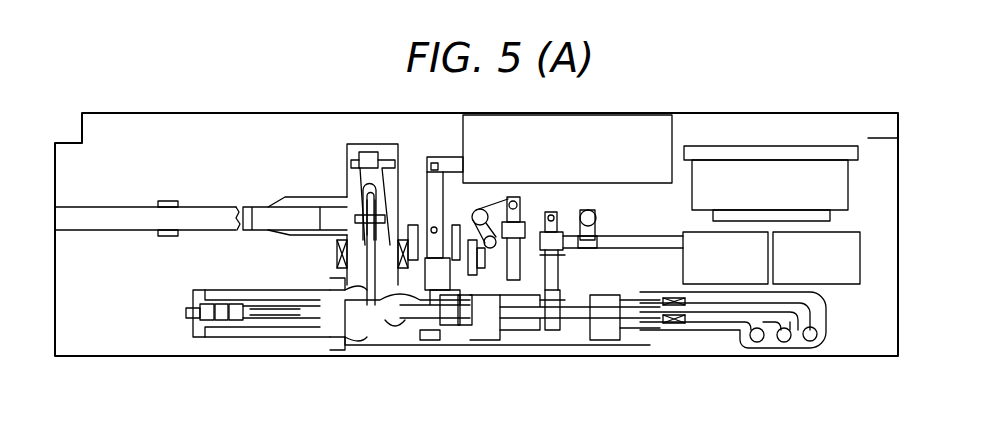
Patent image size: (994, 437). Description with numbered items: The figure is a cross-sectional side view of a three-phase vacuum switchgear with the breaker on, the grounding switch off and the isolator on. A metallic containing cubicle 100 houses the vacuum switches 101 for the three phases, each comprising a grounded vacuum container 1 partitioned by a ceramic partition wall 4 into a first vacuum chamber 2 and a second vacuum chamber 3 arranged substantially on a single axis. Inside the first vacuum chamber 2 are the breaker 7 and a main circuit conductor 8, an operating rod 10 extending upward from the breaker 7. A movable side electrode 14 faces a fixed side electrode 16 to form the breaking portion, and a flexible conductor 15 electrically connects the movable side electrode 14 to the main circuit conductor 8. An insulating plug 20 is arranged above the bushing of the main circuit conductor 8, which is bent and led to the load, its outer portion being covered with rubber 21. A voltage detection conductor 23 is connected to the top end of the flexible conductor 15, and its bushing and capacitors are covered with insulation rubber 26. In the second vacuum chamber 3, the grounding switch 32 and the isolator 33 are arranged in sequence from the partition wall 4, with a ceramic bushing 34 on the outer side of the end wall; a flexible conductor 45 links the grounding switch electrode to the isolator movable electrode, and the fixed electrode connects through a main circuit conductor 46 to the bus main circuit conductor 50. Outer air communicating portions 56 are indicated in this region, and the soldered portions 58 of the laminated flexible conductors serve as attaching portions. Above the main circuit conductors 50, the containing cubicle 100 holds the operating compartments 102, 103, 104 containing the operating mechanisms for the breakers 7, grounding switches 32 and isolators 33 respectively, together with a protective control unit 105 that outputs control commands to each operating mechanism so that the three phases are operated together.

The containing cubicle 100 is at (246, 113).
The rubber 21 is at (278, 238).
The insulating plug 20 is at (362, 180).
The breaker 7 is at (424, 255).
The operating rod 10 is at (495, 233).
The grounding switch 32 is at (540, 255).
The operating compartment 102 is at (604, 168).
The operating compartment 103 is at (688, 232).
The operating compartment 104 is at (857, 250).
The protective control unit 105 is at (838, 184).
The main circuit conductor 8 is at (348, 276).
The insulation rubber 26 is at (247, 335).
The voltage detection conductor 23 is at (298, 312).
The vacuum container 1 is at (392, 345).
The first vacuum chamber 2 is at (420, 325).
The flexible conductor 15 is at (390, 322).
The vacuum switch 101 is at (430, 340).
The movable side electrode 14 is at (450, 328).
The fixed side electrode 16 is at (462, 328).
The partition wall 4 is at (483, 340).
The second vacuum chamber 3 is at (515, 340).
The flexible conductor 45 is at (540, 282).
The isolator 33 is at (558, 305).
The bushing 34 is at (618, 322).
The main circuit conductor 46 is at (645, 326).
The outer air communicating portion 56 is at (684, 340).
The soldered portion 58 is at (714, 340).
The main circuit conductor 50 is at (808, 341).